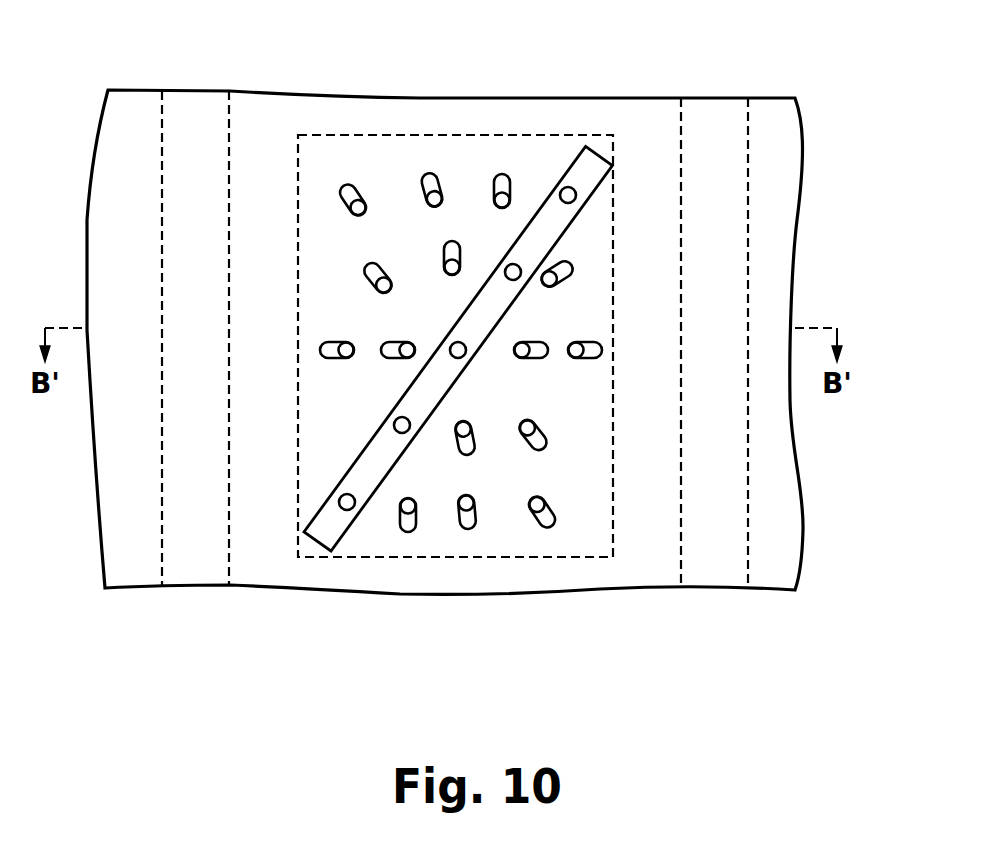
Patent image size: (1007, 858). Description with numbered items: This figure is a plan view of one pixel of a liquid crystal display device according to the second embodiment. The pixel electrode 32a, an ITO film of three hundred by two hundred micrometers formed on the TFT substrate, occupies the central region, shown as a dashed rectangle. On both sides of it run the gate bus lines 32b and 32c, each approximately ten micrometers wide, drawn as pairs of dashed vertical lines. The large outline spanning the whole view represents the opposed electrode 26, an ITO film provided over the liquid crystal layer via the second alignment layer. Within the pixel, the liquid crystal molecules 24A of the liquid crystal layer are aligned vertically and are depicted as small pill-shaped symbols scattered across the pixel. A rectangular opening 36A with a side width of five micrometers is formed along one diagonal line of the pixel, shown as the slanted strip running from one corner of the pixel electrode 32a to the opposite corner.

The opposed electrode 26 is at (801, 488).
The pixel electrode 32a is at (388, 135).
The gate bus line 32b is at (229, 133).
The gate bus line 32c is at (748, 133).
The liquid crystal molecules 24A is at (468, 530).
The opening 36A is at (586, 146).